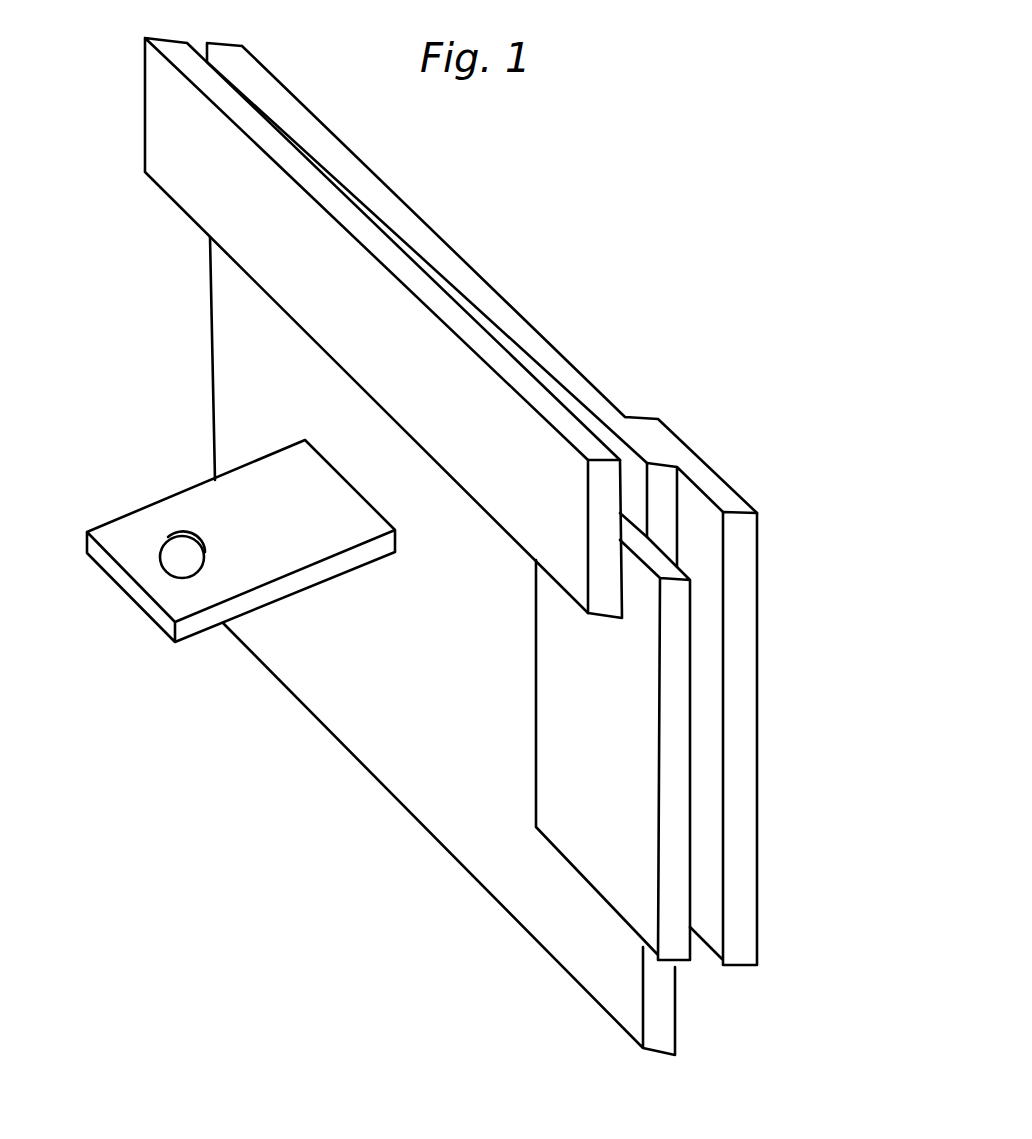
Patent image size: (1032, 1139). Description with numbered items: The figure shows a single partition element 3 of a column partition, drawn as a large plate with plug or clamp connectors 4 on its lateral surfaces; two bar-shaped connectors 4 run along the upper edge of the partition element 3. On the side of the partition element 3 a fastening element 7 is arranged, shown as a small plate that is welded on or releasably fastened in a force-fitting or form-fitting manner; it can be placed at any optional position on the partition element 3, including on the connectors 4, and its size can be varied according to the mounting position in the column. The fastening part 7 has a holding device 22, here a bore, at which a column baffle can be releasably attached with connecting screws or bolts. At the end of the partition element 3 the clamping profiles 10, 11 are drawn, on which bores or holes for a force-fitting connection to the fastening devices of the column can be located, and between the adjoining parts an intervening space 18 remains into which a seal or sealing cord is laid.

The partition element 3 is at (405, 735).
The plug or clamp connector 4 is at (257, 185).
The fastening element 7 is at (240, 570).
The clamping profile 10 is at (668, 830).
The clamping profile 11 is at (745, 883).
The intervening space 18 is at (628, 490).
The holding device 22 is at (188, 560).